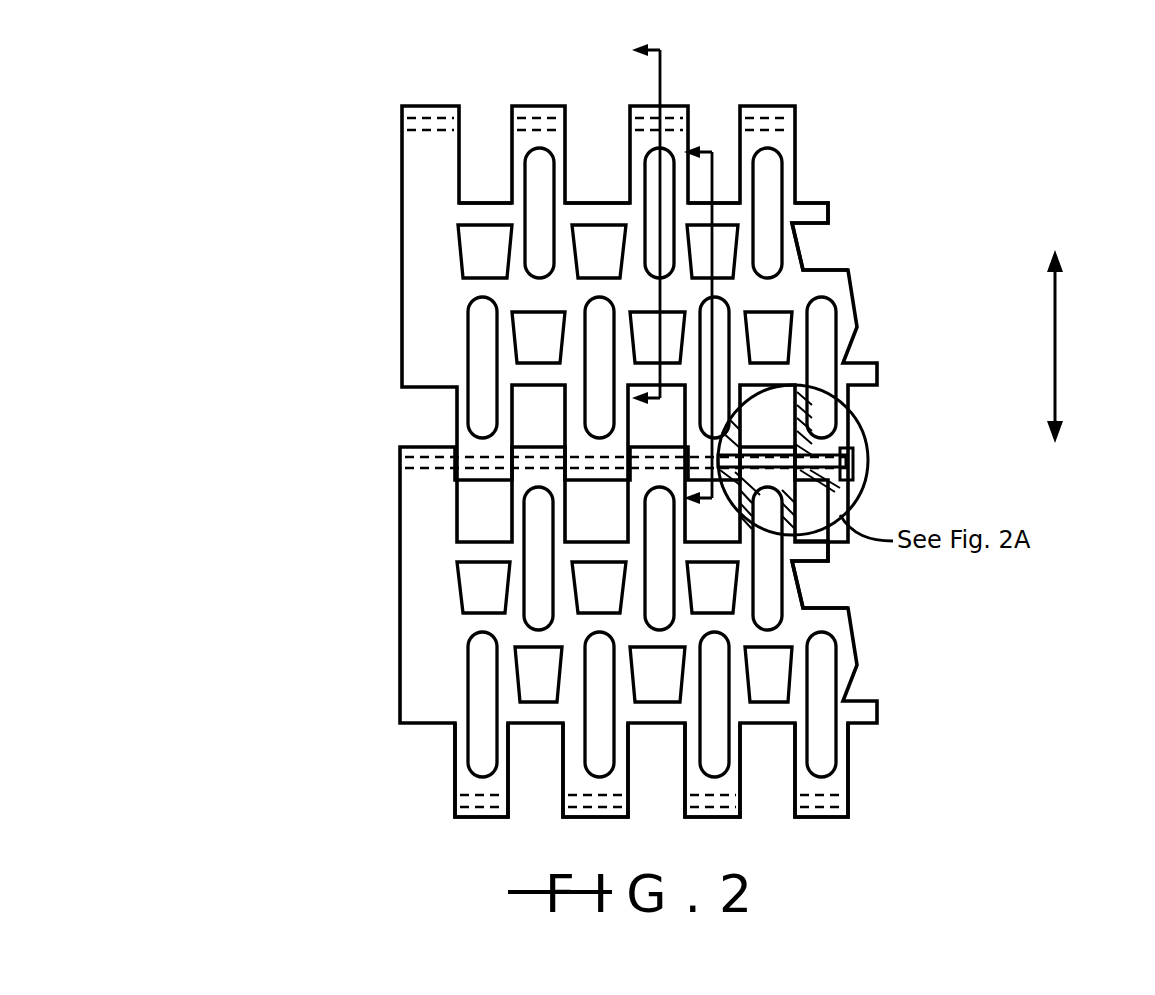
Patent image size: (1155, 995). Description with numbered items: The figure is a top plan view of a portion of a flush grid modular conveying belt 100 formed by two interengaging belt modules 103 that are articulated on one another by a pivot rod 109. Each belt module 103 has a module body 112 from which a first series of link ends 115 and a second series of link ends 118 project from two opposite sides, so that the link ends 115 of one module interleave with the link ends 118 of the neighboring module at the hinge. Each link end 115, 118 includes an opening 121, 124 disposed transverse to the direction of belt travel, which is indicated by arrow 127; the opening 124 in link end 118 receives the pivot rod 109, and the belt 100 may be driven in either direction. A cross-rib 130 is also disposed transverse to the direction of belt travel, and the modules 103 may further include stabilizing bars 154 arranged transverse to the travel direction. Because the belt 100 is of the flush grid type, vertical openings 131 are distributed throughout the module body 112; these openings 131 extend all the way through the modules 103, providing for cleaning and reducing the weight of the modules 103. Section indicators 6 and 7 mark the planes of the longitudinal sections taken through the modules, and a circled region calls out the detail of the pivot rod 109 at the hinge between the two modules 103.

The flush grid modular conveying belt 100 is at (235, 222).
The belt module 103 is at (425, 296).
The pivot rod 109 is at (845, 426).
The module body 112 is at (462, 359).
The link end 115 is at (480, 478).
The link end 118 is at (408, 122).
The opening 121 is at (487, 806).
The opening 124 is at (430, 450).
The arrow 127 is at (1057, 313).
The cross-rib 130 is at (745, 290).
The vertical openings 131 is at (540, 168).
The stabilizing bars 154 is at (465, 213).
The section line 6- 6 is at (649, 223).
The section line 7- 7 is at (702, 325).